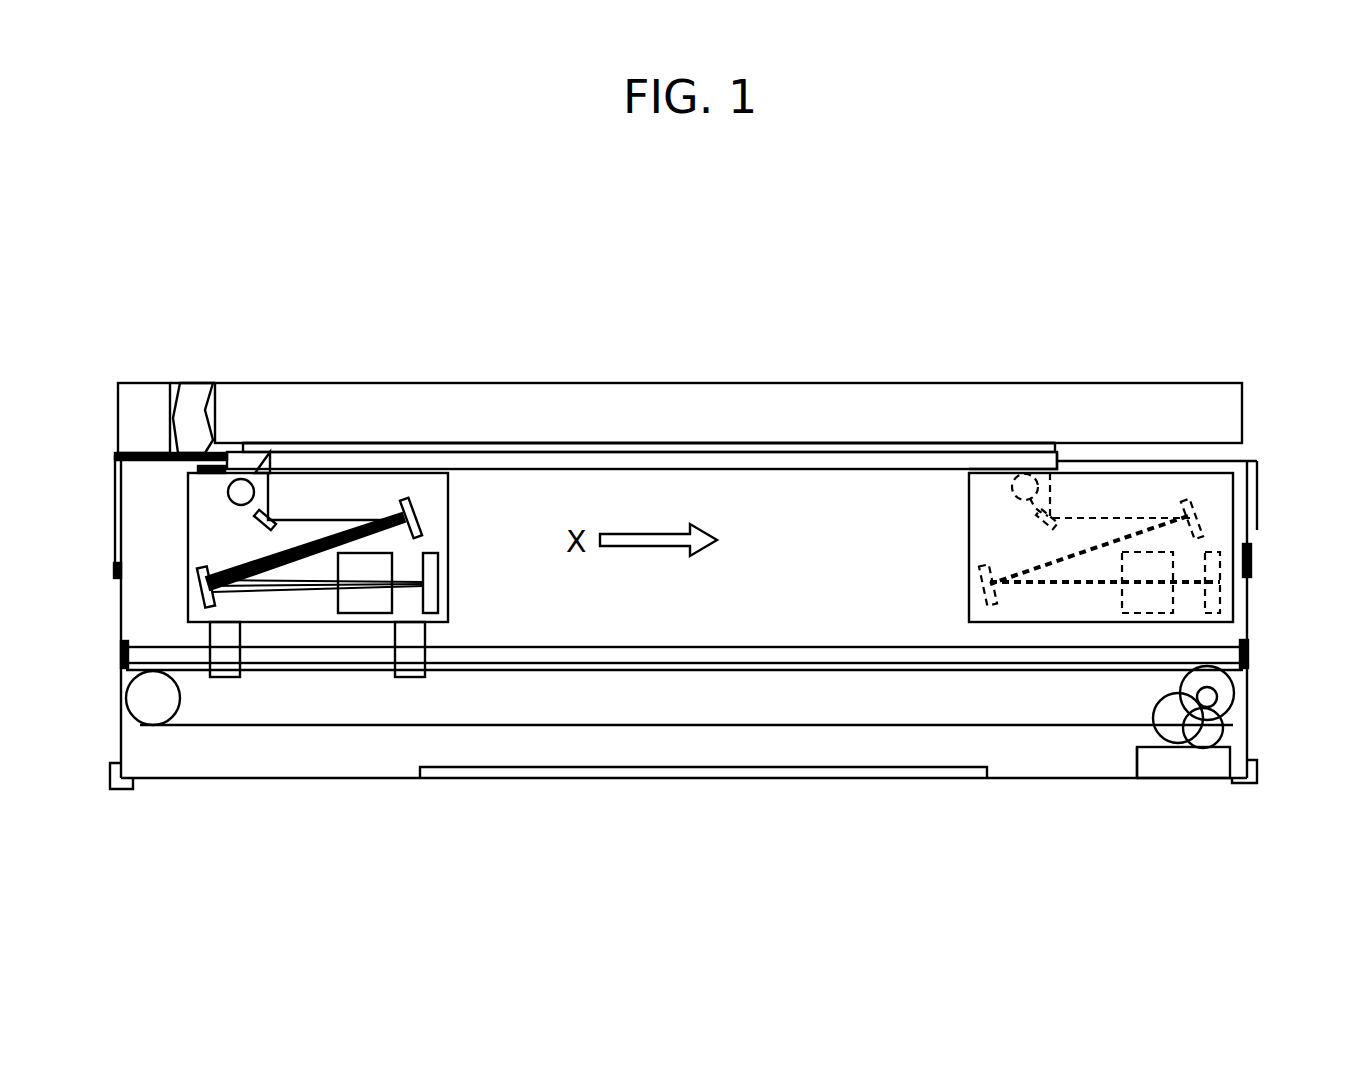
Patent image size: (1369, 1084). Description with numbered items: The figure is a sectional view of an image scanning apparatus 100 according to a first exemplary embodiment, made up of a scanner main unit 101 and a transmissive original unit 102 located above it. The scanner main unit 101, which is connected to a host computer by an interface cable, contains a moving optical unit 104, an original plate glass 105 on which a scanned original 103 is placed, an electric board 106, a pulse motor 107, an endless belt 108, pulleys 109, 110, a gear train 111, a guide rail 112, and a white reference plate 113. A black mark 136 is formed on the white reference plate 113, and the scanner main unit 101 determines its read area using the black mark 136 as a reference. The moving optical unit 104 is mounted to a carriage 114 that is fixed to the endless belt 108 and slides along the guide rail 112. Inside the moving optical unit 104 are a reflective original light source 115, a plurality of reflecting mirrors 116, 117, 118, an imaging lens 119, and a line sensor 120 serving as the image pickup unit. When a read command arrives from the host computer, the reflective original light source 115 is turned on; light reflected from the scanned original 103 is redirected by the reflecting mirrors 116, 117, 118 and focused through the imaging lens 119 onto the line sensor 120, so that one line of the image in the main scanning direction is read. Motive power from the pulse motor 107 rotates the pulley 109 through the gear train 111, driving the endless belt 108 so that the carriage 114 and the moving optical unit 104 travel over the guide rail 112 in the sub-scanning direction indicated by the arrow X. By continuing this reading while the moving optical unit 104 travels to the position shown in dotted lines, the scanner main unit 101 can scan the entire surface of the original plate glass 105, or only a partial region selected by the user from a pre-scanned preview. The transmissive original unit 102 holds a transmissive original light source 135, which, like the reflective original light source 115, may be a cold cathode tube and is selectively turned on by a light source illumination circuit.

The image scanning apparatus 100 is at (862, 145).
The scanner main unit 101 is at (150, 780).
The transmissive original unit 102 is at (752, 442).
The scanned original 103 is at (487, 447).
The moving optical unit 104 is at (293, 492).
The original plate glass 105 is at (663, 458).
The electric board 106 is at (745, 778).
The pulse motor 107 is at (1175, 765).
The endless belt 108 is at (272, 726).
The pulley 109 is at (1228, 745).
The pulley 110 is at (126, 698).
The gear train 111 is at (1138, 748).
The guide rail 112 is at (860, 650).
The white reference plate 113 is at (200, 468).
The carriage 114 is at (220, 677).
The reflective original light source 115 is at (228, 492).
The reflecting mirror 116 is at (256, 520).
The reflecting mirror 117 is at (403, 497).
The reflecting mirror 118 is at (199, 586).
The imaging lens 119 is at (357, 613).
The line sensor 120 is at (433, 552).
The transmissive original light source 135 is at (571, 402).
The black mark 136 is at (213, 455).